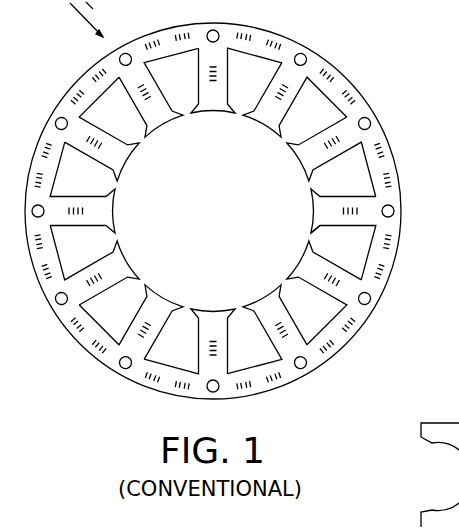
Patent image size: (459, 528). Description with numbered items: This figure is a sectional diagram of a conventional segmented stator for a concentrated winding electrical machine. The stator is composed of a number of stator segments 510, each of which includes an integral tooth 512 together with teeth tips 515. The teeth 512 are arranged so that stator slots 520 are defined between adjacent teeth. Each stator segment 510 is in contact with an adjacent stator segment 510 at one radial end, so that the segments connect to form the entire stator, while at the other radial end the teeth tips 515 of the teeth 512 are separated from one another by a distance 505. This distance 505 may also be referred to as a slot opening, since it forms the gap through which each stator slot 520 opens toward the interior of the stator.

The distance 505 is at (285, 112).
The stator segment 510 is at (386, 131).
The tooth 512 is at (309, 240).
The teeth tips 515 is at (312, 195).
The stator slot 520 is at (331, 347).